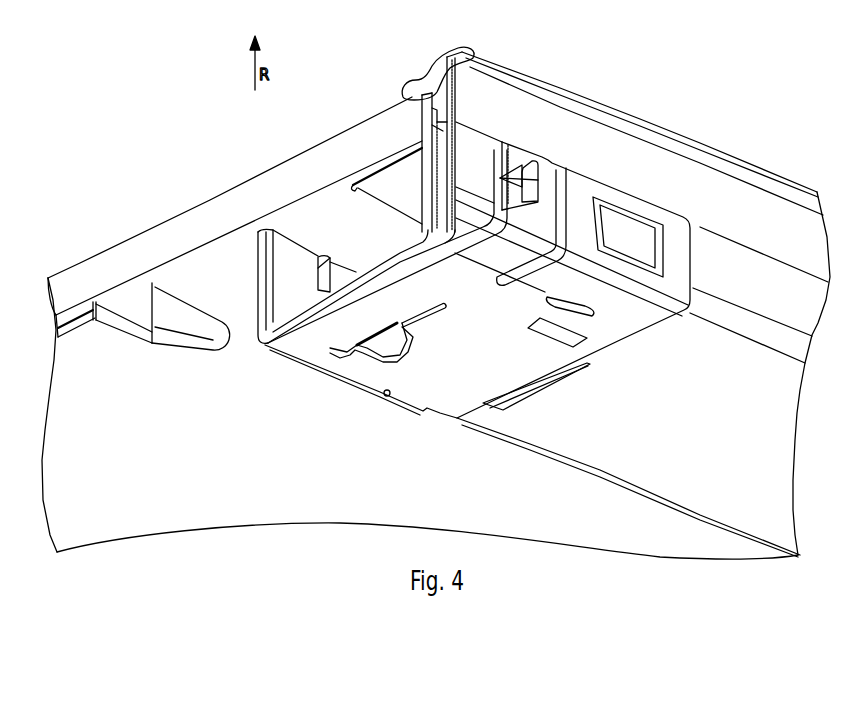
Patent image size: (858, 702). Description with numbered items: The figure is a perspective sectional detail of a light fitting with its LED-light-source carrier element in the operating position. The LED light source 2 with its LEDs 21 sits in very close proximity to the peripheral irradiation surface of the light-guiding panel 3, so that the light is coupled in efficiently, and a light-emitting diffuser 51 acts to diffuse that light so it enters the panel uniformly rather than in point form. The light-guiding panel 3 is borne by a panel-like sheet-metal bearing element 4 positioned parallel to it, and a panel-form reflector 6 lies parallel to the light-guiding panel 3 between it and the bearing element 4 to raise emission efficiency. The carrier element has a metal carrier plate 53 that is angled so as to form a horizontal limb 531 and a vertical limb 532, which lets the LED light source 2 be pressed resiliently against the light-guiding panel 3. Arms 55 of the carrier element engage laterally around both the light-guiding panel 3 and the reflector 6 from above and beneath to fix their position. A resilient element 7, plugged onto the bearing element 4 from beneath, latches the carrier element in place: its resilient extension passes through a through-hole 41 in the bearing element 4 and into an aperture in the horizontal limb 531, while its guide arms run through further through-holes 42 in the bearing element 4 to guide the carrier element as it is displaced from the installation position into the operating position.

The LED light source 2 is at (443, 130).
The LEDs 21 is at (435, 109).
The light-guiding panel 3 is at (330, 150).
The bearing element 4 is at (207, 263).
The through-hole 41 is at (402, 327).
The further through-holes 42 is at (550, 383).
The light-emitting diffuser 51 is at (428, 143).
The metal carrier plate 53 is at (455, 74).
The horizontal limb 531 is at (392, 262).
The vertical limb 532 is at (453, 190).
The arms 55 is at (412, 90).
The reflector 6 is at (78, 316).
The resilient element 7 is at (613, 340).